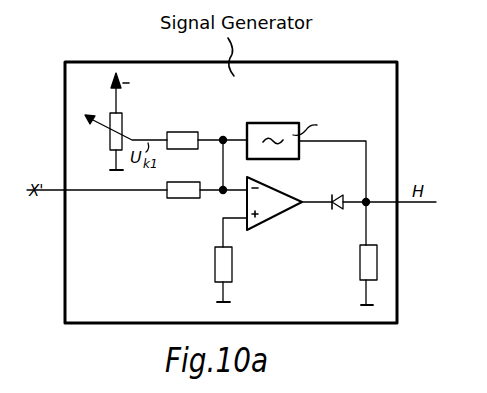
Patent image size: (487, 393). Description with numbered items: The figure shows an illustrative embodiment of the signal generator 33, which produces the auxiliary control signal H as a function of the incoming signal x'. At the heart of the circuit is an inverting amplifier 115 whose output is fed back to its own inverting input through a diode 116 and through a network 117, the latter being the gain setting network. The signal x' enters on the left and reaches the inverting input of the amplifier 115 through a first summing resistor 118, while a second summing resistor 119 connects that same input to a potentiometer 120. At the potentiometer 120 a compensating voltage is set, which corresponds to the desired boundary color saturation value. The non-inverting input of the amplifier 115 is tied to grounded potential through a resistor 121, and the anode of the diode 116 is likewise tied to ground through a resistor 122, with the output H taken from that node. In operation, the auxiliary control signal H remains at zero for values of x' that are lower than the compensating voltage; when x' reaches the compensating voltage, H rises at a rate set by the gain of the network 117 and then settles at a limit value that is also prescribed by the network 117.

The signal generator 33 is at (66, 250).
The inverting amplifier 115 is at (268, 206).
The diode 116 is at (335, 208).
The network 117 is at (275, 128).
The first summing resistor 118 is at (183, 199).
The second summing resistor 119 is at (182, 138).
The potentiometer 120 is at (120, 128).
The resistor 121 is at (232, 267).
The resistor 122 is at (360, 266).